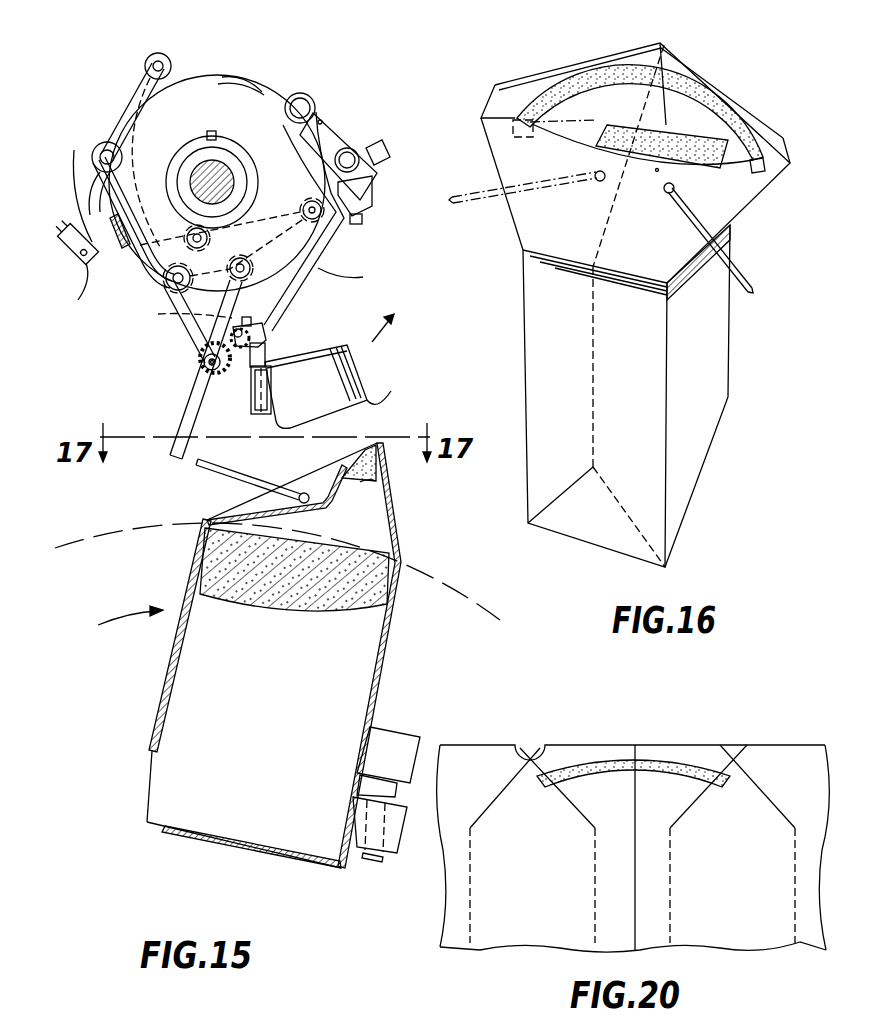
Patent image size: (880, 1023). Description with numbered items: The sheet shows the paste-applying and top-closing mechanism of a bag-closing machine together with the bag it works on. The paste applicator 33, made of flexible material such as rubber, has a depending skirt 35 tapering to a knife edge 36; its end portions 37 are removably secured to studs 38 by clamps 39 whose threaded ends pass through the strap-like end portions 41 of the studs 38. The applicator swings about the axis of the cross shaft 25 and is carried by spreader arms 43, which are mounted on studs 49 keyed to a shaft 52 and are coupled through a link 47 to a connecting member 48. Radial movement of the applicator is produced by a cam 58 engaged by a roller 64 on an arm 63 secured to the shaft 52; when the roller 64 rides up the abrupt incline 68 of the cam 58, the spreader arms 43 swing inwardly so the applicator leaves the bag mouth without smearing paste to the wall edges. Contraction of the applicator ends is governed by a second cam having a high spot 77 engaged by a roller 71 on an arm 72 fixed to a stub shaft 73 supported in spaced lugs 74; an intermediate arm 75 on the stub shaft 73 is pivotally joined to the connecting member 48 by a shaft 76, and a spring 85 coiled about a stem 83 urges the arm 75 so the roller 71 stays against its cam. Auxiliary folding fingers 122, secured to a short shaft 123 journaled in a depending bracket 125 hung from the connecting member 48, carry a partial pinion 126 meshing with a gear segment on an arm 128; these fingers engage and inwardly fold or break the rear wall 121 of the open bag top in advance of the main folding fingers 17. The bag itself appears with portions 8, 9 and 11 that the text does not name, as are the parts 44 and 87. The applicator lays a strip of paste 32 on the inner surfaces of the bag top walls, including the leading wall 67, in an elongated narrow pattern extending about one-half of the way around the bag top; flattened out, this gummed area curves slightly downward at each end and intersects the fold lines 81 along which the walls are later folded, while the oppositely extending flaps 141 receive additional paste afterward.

In FIG. 15, the bag front wall 8 is at (165, 655).
In FIG. 15, the bag bottom 9 is at (232, 850).
In FIG. 15, the bag side wall 11 is at (380, 661).
In FIG. 15, the folding fingers 17 is at (236, 473).
In FIG. 16, the folding fingers 17 is at (473, 198).
In FIG. 15, the cross shaft 25 is at (205, 180).
In FIG. 15, the strip of paste 32 is at (365, 482).
In FIG. 16, the strip of paste 32 is at (620, 78).
In FIG. 15, the paste applicator 33 is at (350, 340).
In FIG. 15, the depending skirt 35 is at (360, 388).
In FIG. 15, the knife edge 36 is at (369, 400).
In FIG. 15, the end portions of the applicator 37 is at (252, 384).
In FIG. 15, the studs 38 is at (273, 335).
In FIG. 15, the clamps 39 is at (256, 396).
In FIG. 15, the strap-like end portions 41 is at (265, 355).
In FIG. 15, the spreader arms 43 is at (281, 262).
In FIG. 15, the pivot block 44 is at (251, 322).
In FIG. 15, the link 47 is at (365, 195).
In FIG. 15, the connecting member 48 is at (267, 222).
In FIG. 15, the studs 49 is at (362, 222).
In FIG. 15, the shaft 52 is at (351, 156).
In FIG. 15, the cam 58 is at (250, 105).
In FIG. 15, the arm 63 is at (323, 123).
In FIG. 15, the roller 64 is at (304, 94).
In FIG. 15, the leading wall 67 is at (385, 480).
In FIG. 16, the leading wall 67 is at (672, 47).
In FIG. 20, the leading wall 67 is at (657, 745).
In FIG. 15, the incline 68 is at (322, 122).
In FIG. 15, the roller 71 is at (160, 53).
In FIG. 15, the arm 72 is at (143, 80).
In FIG. 15, the stub shaft 73 is at (103, 150).
In FIG. 15, the spaced lugs 74 is at (121, 150).
In FIG. 15, the intermediate arm 75 is at (76, 172).
In FIG. 15, the shaft 76 is at (174, 270).
In FIG. 15, the high spot 77 is at (233, 76).
In FIG. 16, the fold lines 81 is at (595, 119).
In FIG. 20, the fold lines 81 is at (570, 803).
In FIG. 15, the stem 83 is at (65, 262).
In FIG. 15, the spring 85 is at (122, 268).
In FIG. 15, the lead wire 87 is at (78, 300).
In FIG. 15, the rear wall 121 is at (321, 502).
In FIG. 16, the rear wall 121 is at (657, 170).
In FIG. 15, the auxiliary folding fingers 122 is at (190, 411).
In FIG. 15, the short shaft 123 is at (202, 366).
In FIG. 15, the depending bracket 125 is at (190, 326).
In FIG. 15, the partial pinion 126 is at (200, 360).
In FIG. 15, the arm 128 is at (179, 314).
In FIG. 16, the flaps 141 is at (483, 118).